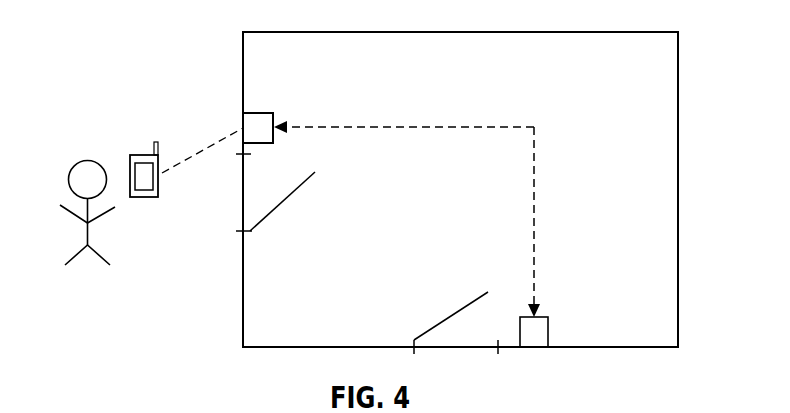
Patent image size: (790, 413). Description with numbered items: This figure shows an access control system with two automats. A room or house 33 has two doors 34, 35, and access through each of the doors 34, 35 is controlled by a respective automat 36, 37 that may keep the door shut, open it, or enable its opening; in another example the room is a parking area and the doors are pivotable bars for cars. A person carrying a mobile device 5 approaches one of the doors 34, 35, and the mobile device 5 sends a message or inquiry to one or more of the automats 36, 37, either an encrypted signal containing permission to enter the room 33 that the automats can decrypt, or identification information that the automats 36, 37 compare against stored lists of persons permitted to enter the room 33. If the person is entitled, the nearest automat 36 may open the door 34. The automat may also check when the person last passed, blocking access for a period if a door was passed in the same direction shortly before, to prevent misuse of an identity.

The mobile device 5 is at (158, 188).
The room or house 33 is at (678, 190).
The door 34 is at (285, 203).
The door 35 is at (449, 315).
The automat 36 is at (258, 113).
The automat 37 is at (549, 333).